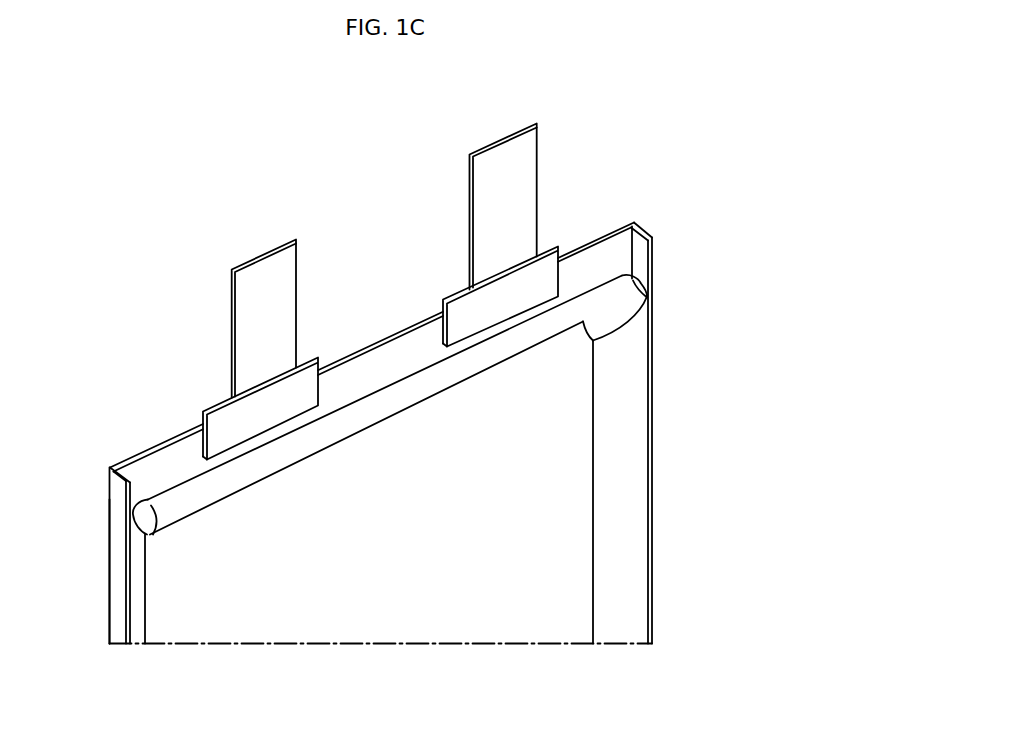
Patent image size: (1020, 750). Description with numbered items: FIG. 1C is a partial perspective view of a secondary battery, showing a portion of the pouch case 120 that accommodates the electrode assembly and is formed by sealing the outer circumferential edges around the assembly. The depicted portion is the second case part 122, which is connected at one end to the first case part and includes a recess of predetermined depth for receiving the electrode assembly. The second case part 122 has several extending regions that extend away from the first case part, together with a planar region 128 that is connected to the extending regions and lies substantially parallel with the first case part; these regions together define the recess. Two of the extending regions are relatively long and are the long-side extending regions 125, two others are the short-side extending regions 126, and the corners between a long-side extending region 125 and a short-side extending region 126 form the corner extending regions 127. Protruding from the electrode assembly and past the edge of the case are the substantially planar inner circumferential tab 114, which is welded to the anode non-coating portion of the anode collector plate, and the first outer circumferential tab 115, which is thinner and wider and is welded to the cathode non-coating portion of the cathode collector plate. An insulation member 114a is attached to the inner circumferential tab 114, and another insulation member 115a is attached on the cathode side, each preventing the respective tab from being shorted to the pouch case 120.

The inner circumferential tab 114 is at (268, 270).
The insulation member 114a is at (215, 405).
The first outer circumferential tab 115 is at (507, 160).
The insulation member 115a is at (548, 246).
The pouch case 120 is at (639, 214).
The second case part 122 is at (446, 650).
The long-side extending region 125 is at (137, 577).
The short-side extending region 126 is at (363, 407).
The corner extending region 127 is at (143, 512).
The planar region 128 is at (570, 480).